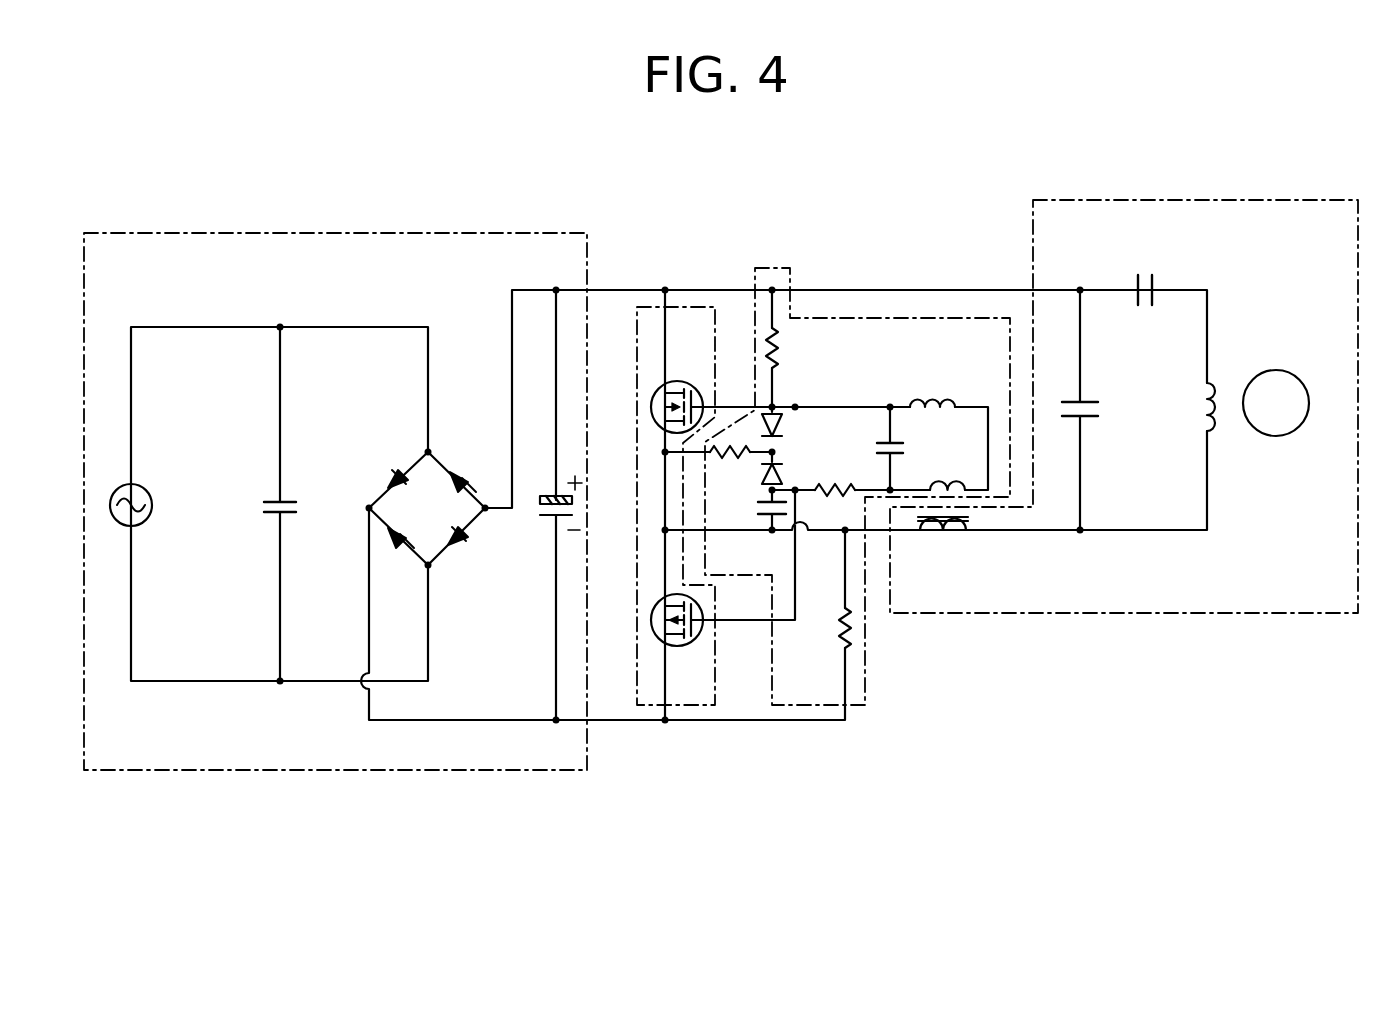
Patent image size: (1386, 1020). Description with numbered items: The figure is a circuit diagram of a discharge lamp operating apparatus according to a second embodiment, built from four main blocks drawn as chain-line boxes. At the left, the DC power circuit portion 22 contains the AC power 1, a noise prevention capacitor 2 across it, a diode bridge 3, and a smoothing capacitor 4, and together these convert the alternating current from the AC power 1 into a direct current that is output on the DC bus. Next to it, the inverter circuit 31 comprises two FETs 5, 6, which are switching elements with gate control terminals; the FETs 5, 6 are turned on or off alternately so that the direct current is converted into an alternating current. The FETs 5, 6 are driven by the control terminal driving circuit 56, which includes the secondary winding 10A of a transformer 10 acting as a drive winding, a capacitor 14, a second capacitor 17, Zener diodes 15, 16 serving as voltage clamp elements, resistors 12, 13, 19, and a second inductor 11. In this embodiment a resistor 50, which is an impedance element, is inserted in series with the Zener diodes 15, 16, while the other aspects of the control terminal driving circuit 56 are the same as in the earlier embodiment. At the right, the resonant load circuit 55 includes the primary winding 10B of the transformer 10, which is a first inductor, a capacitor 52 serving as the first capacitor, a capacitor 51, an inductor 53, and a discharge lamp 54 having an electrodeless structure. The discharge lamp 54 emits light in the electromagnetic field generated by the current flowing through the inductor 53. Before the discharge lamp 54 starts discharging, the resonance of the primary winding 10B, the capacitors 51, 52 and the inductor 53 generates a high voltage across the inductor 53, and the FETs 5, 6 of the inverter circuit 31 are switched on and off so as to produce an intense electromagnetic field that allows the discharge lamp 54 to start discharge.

The AC power 1 is at (148, 498).
The noise prevention capacitor 2 is at (264, 510).
The diode bridge 3 is at (389, 470).
The smoothing capacitor 4 is at (548, 522).
The FET 5 is at (683, 382).
The FET 6 is at (703, 640).
The transformer 10 is at (995, 480).
The secondary winding 10A is at (956, 476).
The primary winding 10B is at (912, 550).
The second inductor 11 is at (932, 395).
The resistor 12 is at (786, 346).
The resistor 13 is at (736, 460).
The capacitor 14 is at (759, 519).
The Zener diode 15 is at (783, 425).
The Zener diode 16 is at (785, 473).
The second capacitor 17 is at (878, 433).
The resistor 19 is at (838, 630).
The DC power circuit portion 22 is at (470, 233).
The inverter circuit 31 is at (645, 304).
The resistor 50 is at (834, 507).
The capacitor 51 is at (1101, 411).
The capacitor 52 is at (1146, 274).
The inductor 53 is at (1191, 417).
The discharge lamp 54 is at (1280, 370).
The resonant load circuit 55 is at (1128, 616).
The control terminal driving circuit 56 is at (867, 665).